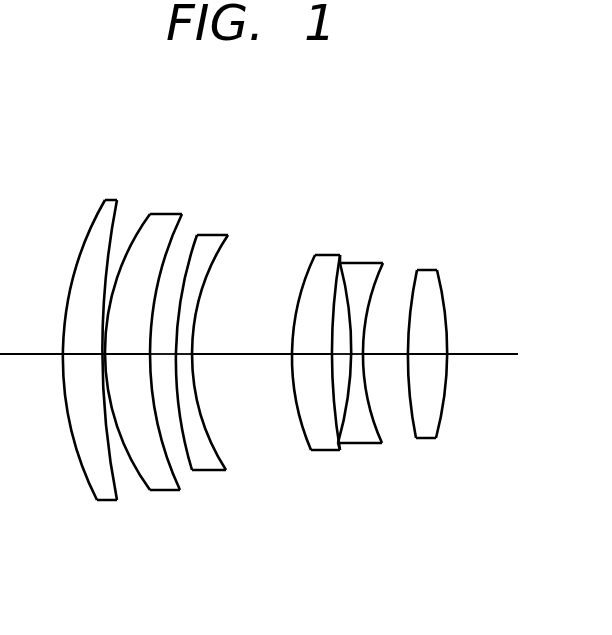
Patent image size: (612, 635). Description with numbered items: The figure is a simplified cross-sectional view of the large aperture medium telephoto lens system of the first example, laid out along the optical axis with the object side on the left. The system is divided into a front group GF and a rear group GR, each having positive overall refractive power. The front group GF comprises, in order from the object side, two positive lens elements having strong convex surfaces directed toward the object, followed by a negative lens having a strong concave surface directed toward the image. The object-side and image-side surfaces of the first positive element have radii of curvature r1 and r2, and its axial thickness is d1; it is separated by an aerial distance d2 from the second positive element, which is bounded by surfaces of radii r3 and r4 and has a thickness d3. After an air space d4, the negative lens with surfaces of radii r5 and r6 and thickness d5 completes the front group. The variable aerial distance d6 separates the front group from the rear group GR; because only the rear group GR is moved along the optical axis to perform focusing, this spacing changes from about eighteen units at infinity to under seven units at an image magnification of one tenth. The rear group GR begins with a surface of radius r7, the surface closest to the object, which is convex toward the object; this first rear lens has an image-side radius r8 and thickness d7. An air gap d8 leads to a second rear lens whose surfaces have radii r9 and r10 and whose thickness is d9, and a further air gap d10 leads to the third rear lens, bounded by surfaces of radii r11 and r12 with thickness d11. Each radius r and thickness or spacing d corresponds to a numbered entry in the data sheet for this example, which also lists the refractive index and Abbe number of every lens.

The front group GF is at (260, 145).
The rear group GR is at (505, 145).
The radius of curvature of first lens surface r1 is at (105, 200).
The radius of curvature of second lens surface r2 is at (117, 200).
The radius of curvature of third lens surface r3 is at (150, 214).
The radius of curvature of fourth lens surface r4 is at (182, 214).
The radius of curvature of fifth lens surface r5 is at (197, 235).
The radius of curvature of sixth lens surface r6 is at (228, 235).
The radius of curvature of seventh lens surface r7 is at (317, 255).
The radius of curvature of eighth lens surface r8 is at (340, 258).
The radius of curvature of ninth lens surface r9 is at (342, 260).
The radius of curvature of tenth lens surface r10 is at (383, 263).
The radius of curvature of eleventh lens surface r11 is at (417, 270).
The radius of curvature of twelfth lens surface r12 is at (437, 270).
The thickness of first lens d1 is at (78, 356).
The aerial distance between first and second lenses d2 is at (104, 356).
The thickness of second lens d3 is at (130, 356).
The aerial distance between second and third lenses d4 is at (166, 356).
The thickness of third lens d5 is at (184, 356).
The variable aerial distance between front and rear groups d6 is at (242, 356).
The thickness of fourth lens d7 is at (312, 356).
The aerial distance between fourth and fifth lenses d8 is at (341, 356).
The thickness of fifth lens d9 is at (357, 356).
The aerial distance between fifth and sixth lenses d10 is at (386, 356).
The thickness of sixth lens d11 is at (427, 356).